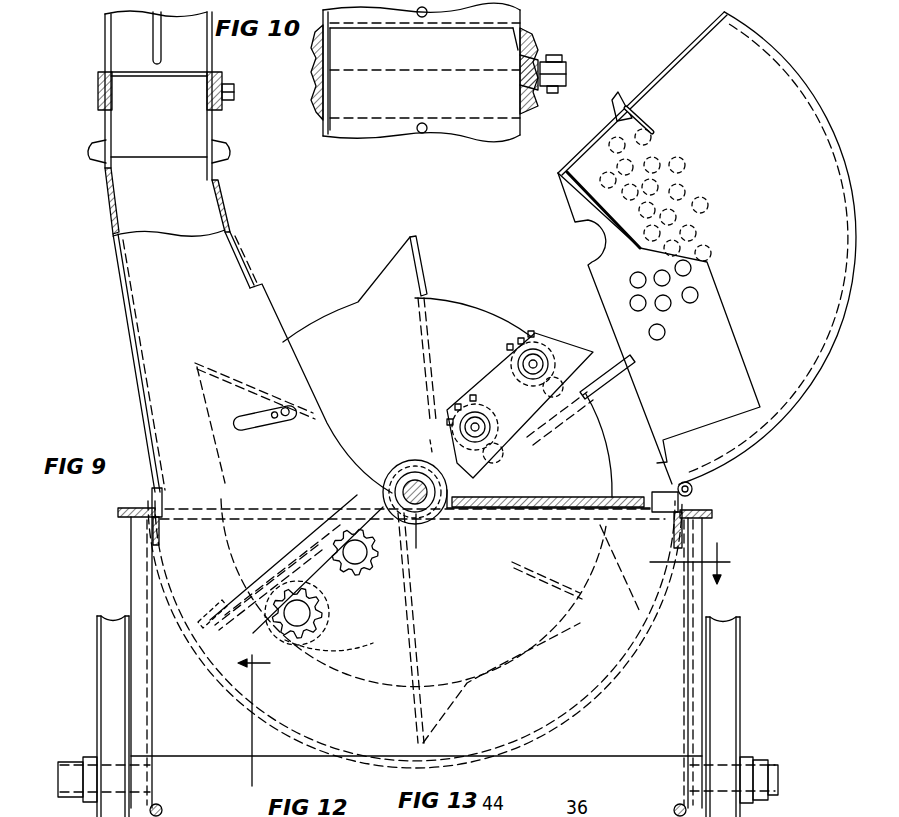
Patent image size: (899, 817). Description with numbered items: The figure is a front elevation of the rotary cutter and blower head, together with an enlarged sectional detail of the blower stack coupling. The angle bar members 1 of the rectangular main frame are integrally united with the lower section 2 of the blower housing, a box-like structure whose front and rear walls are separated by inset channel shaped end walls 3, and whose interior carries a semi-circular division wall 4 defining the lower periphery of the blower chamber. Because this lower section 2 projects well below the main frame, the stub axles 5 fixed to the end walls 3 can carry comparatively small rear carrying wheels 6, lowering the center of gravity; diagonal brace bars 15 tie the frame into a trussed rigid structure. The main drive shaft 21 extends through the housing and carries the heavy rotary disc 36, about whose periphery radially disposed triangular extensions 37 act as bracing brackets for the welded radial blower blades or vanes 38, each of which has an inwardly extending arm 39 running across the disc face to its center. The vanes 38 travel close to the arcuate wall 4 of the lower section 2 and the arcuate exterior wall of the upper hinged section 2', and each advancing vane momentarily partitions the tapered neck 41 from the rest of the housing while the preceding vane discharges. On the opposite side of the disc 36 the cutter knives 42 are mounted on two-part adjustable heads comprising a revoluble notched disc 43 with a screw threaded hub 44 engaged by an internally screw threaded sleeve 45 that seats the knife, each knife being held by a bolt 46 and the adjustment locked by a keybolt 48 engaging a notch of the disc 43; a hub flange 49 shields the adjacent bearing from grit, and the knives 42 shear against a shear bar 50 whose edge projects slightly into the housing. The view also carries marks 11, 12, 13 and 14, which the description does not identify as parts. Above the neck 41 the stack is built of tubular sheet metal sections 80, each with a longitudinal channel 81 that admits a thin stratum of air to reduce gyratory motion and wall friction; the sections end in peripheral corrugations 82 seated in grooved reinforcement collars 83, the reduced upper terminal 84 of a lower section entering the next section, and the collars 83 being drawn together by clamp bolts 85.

In FIG. 9, the angle bar members 1 is at (125, 513).
In FIG. 9, the lower section of the blower housing 2 is at (416, 744).
In FIG. 9, the upper hinged section of the blower housing 2' is at (707, 254).
In FIG. 9, the channel shaped end walls 3 is at (131, 578).
In FIG. 9, the semi-circular division wall 4 is at (615, 672).
In FIG. 9, the stub axles 5 is at (60, 762).
In FIG. 9, the rear carrying wheels 6 is at (105, 683).
In FIG. 9, the section line 11 is at (249, 638).
In FIG. 9, the blade 12 is at (417, 235).
In FIG. 9, the bracket plate 13 is at (470, 401).
In FIG. 9, the section line 14 is at (690, 563).
In FIG. 9, the diagonal brace bars 15 is at (164, 810).
In FIG. 9, the main drive shaft 21 is at (408, 547).
In FIG. 9, the rotary disc 36 is at (480, 318).
In FIG. 9, the triangular extensions 37 is at (390, 280).
In FIG. 9, the blower blades or vanes 38 is at (425, 268).
In FIG. 9, the inwardly extending arms 39 is at (432, 405).
In FIG. 9, the tapered neck 41 is at (252, 361).
In FIG. 9, the cutter knives 42 is at (520, 440).
In FIG. 9, the revoluble notched disc 43 is at (507, 348).
In FIG. 9, the screw threaded hub 44 is at (290, 670).
In FIG. 9, the internally screw threaded sleeve 45 is at (572, 350).
In FIG. 9, the bolt 46 is at (538, 352).
In FIG. 9, the keybolt 48 is at (600, 392).
In FIG. 9, the hub flange 49 is at (396, 478).
In FIG. 9, the shear bar 50 is at (585, 497).
In FIG. 9, the stack sections 80 is at (106, 45).
In FIG. 10, the stack sections 80 is at (523, 12).
In FIG. 9, the longitudinal channel 81 is at (163, 50).
In FIG. 9, the terminal peripheral corrugations 82 is at (113, 84).
In FIG. 10, the terminal peripheral corrugations 82 is at (518, 62).
In FIG. 9, the grooved reinforcement collars 83 is at (313, 100).
In FIG. 10, the grooved reinforcement collars 83 is at (540, 42).
In FIG. 10, the reduced upper terminal 84 is at (512, 32).
In FIG. 9, the clamp bolts 85 is at (235, 93).
In FIG. 10, the clamp bolts 85 is at (568, 58).